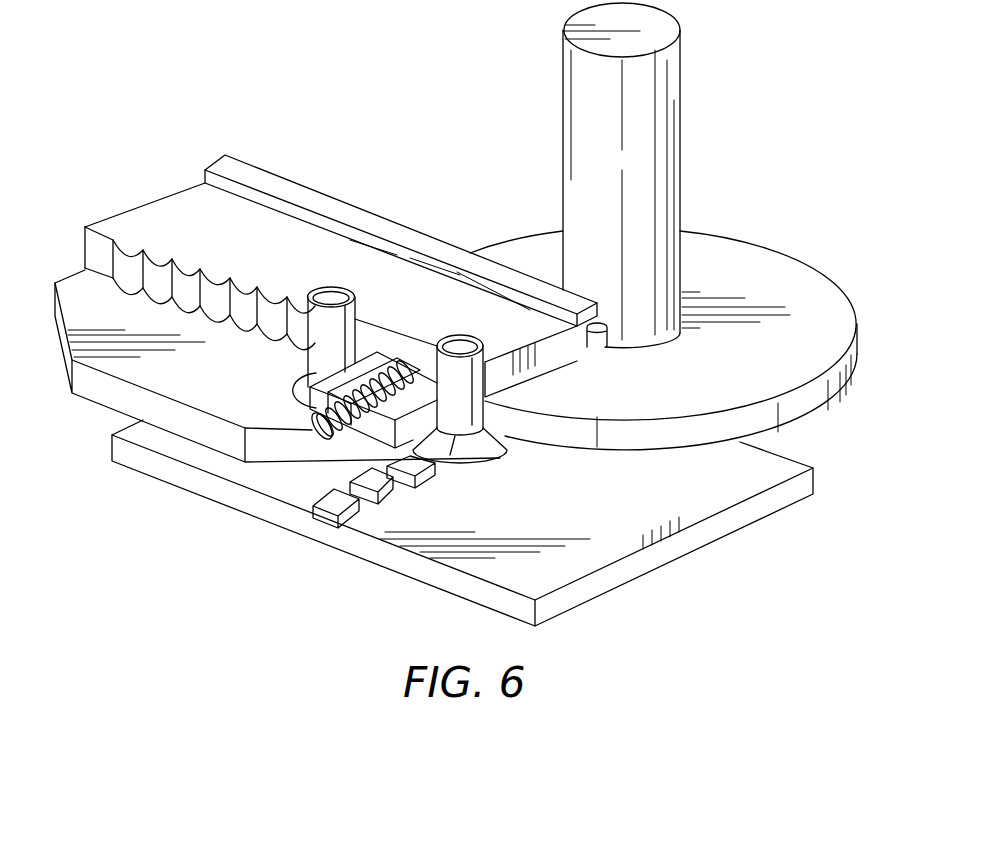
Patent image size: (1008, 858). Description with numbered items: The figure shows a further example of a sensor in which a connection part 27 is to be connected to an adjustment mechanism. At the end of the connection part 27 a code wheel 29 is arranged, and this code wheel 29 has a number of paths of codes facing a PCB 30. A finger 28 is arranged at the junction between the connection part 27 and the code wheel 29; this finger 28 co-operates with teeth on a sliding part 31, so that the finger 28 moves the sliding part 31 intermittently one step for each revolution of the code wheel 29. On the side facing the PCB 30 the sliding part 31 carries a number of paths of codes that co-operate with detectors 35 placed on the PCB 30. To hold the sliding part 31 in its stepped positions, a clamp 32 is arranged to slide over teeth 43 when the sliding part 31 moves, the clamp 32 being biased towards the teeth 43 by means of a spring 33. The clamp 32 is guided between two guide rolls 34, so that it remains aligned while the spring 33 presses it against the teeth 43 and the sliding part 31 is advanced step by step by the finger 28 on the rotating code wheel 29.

The connection part 27 is at (661, 84).
The finger 28 is at (600, 344).
The code wheel 29 is at (821, 388).
The PCB 30 is at (688, 548).
The sliding part 31 is at (296, 212).
The clamp 32 is at (322, 397).
The spring 33 is at (322, 437).
The guide rolls 34 is at (316, 347).
The detectors 35 is at (338, 500).
The teeth 43 is at (128, 257).